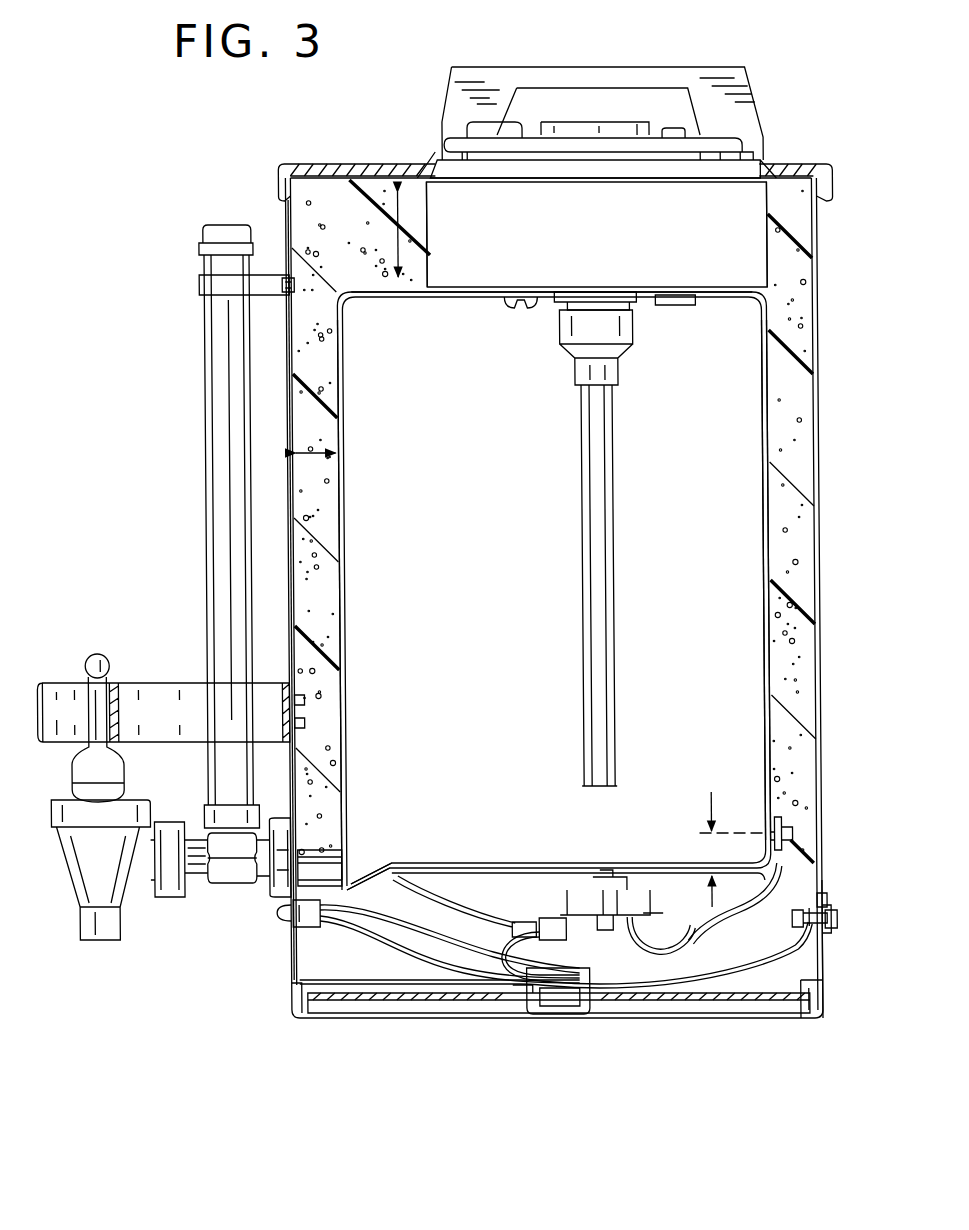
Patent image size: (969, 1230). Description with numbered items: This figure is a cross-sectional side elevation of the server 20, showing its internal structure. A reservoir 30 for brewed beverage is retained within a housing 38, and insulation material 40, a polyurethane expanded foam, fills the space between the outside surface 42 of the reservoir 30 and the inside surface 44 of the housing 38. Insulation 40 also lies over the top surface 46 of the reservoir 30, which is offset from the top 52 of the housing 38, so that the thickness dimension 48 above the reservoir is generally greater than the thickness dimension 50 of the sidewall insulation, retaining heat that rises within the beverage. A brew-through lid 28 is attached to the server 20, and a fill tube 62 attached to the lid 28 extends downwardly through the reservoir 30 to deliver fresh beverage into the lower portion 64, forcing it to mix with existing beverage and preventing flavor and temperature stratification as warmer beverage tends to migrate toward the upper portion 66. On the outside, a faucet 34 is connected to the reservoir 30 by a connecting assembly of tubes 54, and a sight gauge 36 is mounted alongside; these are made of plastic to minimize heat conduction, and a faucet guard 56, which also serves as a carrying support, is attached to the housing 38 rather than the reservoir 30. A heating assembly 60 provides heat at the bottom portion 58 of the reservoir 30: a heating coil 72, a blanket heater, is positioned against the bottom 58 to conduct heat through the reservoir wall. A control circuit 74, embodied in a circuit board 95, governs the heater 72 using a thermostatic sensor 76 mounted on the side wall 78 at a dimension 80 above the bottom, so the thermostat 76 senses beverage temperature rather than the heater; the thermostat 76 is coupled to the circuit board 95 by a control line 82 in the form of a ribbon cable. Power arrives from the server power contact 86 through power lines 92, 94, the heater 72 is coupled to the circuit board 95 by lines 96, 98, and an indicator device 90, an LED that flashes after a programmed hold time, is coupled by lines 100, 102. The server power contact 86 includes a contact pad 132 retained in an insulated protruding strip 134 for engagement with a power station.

The server 20 is at (193, 198).
The brew-through lid 28 is at (458, 150).
The reservoir 30 is at (337, 505).
The faucet 34 is at (113, 880).
The sight gauge 36 is at (219, 404).
The housing 38 is at (290, 447).
The insulation material 40 is at (316, 630).
The outside surface of the reservoir 42 is at (343, 685).
The inside surface of the housing 44 is at (296, 568).
The top surface of the reservoir 46 is at (372, 294).
The thickness dimension of top insulation 48 is at (404, 240).
The thickness dimension of sidewall insulation 50 is at (336, 452).
The top of the housing 52 is at (345, 180).
The connecting assembly of tubes 54 is at (232, 888).
The faucet guard 56 is at (64, 683).
The bottom portion of the reservoir 58 is at (475, 888).
The heating assembly 60 is at (657, 930).
The fill tube 62 is at (597, 490).
The lower portion of the reservoir 64 is at (744, 658).
The upper portion of the reservoir 66 is at (740, 402).
The heating coil 72 is at (447, 877).
The control circuit 74 is at (618, 925).
The thermostatic sensor 76 is at (776, 822).
The side wall of the reservoir 78 is at (773, 740).
The dimension above the bottom 80 is at (713, 852).
The control line 82 is at (715, 920).
The server power contact 86 is at (822, 880).
The indicator device 90 is at (289, 916).
The power line 92 is at (728, 980).
The power line 94 is at (556, 956).
The circuit board 95 is at (637, 915).
The heater line 96 is at (420, 880).
The heater line 98 is at (320, 868).
The indicator line 100 is at (362, 937).
The indicator line 102 is at (394, 940).
The contact pad 132 is at (831, 922).
The insulated protruding strip 134 is at (822, 905).